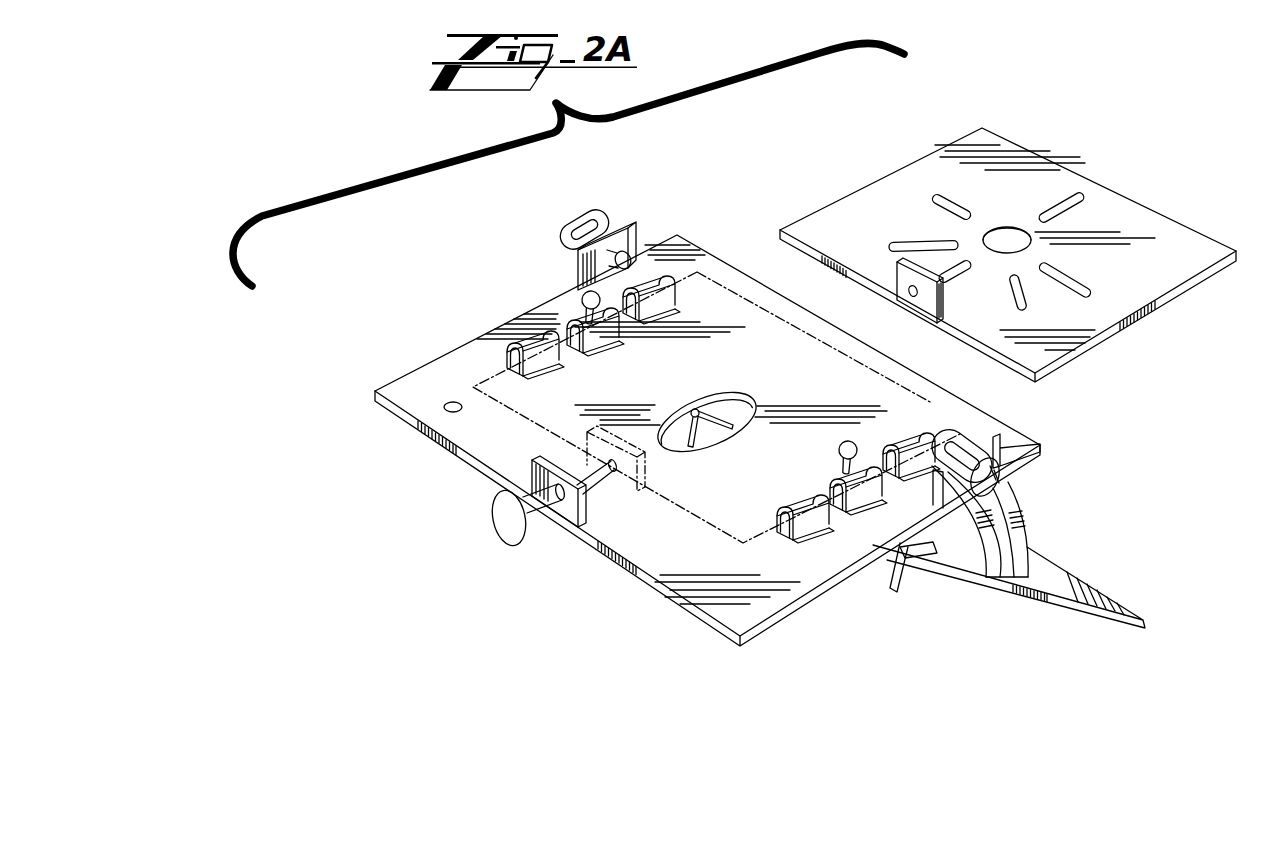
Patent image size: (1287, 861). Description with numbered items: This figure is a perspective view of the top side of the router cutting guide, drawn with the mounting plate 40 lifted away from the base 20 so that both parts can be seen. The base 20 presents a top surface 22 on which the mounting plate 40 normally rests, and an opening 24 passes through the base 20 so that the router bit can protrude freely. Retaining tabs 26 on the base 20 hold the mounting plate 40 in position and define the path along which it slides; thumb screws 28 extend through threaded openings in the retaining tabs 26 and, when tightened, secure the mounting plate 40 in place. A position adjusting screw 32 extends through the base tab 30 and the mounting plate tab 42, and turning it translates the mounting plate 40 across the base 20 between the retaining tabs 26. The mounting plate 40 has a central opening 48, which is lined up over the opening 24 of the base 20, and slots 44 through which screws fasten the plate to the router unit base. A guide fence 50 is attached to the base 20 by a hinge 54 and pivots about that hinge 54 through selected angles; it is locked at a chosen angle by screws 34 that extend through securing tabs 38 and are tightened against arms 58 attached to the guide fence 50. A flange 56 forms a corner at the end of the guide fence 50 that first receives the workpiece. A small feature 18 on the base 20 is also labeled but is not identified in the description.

The aperture 18 is at (447, 412).
The base 20 is at (648, 583).
The top surface 22 is at (698, 600).
The opening 24 is at (692, 411).
The retaining tabs 26 is at (650, 290).
The thumb screws 28 is at (580, 293).
The base tab 30 is at (570, 518).
The position adjusting screw 32 is at (492, 530).
The screws 34 is at (621, 252).
The securing tabs 38 is at (570, 240).
The mounting plate 40 is at (697, 272).
The mounting plate tab 42 is at (897, 275).
The slots 44 is at (930, 192).
The opening 48 is at (1010, 229).
The guide fence 50 is at (1128, 588).
The hinge 54 is at (913, 558).
The flange 56 is at (884, 578).
The arms 58 is at (578, 221).